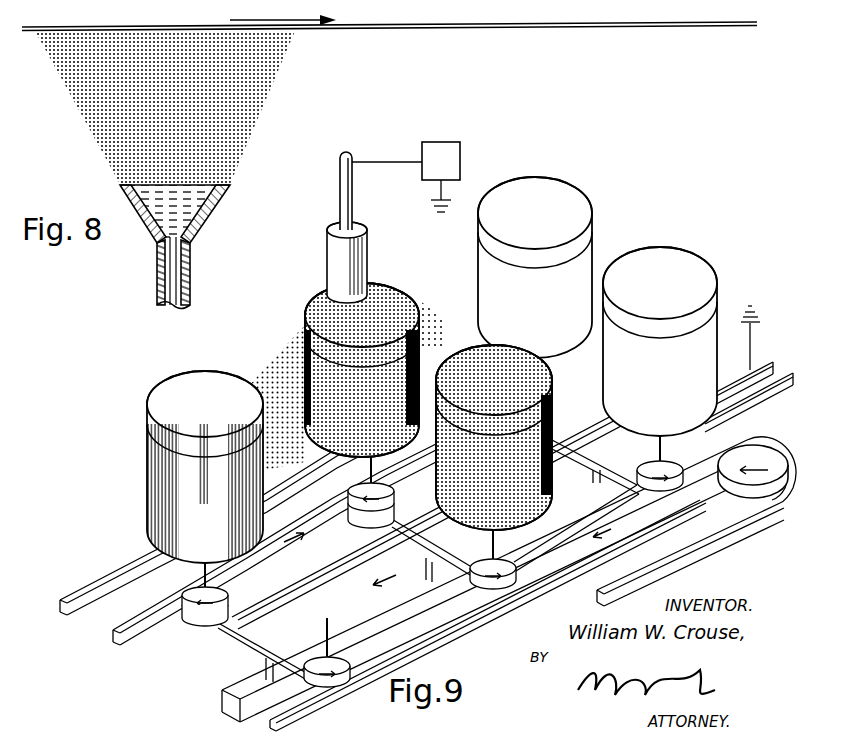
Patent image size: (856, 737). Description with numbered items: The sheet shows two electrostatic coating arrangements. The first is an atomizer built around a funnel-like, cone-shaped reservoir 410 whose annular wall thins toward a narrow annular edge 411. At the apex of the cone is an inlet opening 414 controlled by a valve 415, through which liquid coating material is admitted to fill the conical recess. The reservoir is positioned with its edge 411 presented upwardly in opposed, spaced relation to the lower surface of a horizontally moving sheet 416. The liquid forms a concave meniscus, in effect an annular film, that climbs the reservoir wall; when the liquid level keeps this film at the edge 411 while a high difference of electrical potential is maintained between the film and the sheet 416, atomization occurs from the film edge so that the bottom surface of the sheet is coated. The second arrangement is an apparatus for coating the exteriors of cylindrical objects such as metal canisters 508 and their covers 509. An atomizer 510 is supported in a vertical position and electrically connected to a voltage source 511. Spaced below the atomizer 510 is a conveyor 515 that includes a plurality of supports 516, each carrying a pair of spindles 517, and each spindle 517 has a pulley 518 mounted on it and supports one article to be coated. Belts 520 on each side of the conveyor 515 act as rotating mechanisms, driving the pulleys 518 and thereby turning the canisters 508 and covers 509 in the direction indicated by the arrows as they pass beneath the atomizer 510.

In FIG. 8, the funnel-like or cone-shaped reservoir 410 is at (196, 226).
In FIG. 8, the annular narrow edge 411 is at (231, 186).
In FIG. 8, the inlet opening 414 is at (165, 250).
In FIG. 8, the valve 415 is at (176, 280).
In FIG. 9, the horizontally moving sheet 416 is at (482, 27).
In FIG. 9, the metal canisters 508 is at (578, 268).
In FIG. 9, the covers 509 is at (580, 216).
In FIG. 9, the atomizer 510 is at (335, 250).
In FIG. 9, the voltage source 511 is at (458, 158).
In FIG. 9, the conveyor 515 is at (236, 672).
In FIG. 9, the supports 516 is at (253, 640).
In FIG. 9, the spindles 517 is at (199, 579).
In FIG. 9, the pulley 518 is at (193, 622).
In FIG. 9, the belts 520 is at (237, 571).